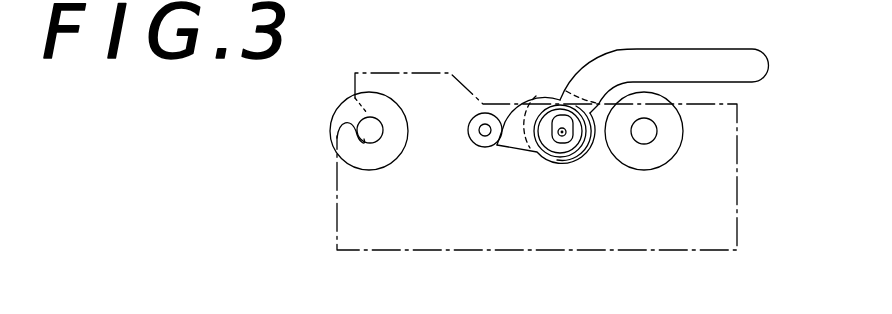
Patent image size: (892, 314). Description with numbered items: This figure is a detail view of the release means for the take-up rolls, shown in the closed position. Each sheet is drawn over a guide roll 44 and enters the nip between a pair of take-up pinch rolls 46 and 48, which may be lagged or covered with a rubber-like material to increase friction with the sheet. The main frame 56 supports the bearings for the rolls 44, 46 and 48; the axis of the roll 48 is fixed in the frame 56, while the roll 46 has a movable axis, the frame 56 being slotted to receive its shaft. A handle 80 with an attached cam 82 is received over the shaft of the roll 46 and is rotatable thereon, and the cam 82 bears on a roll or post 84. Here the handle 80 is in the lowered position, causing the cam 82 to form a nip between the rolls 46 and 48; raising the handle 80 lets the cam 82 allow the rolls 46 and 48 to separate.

The guide roll 44 is at (365, 171).
The take-up pinch roll 46 is at (552, 164).
The take-up pinch roll 48 is at (664, 169).
The main frame 56 is at (740, 118).
The handle 80 is at (677, 48).
The cam 82 is at (512, 150).
The roll or post 84 is at (467, 130).